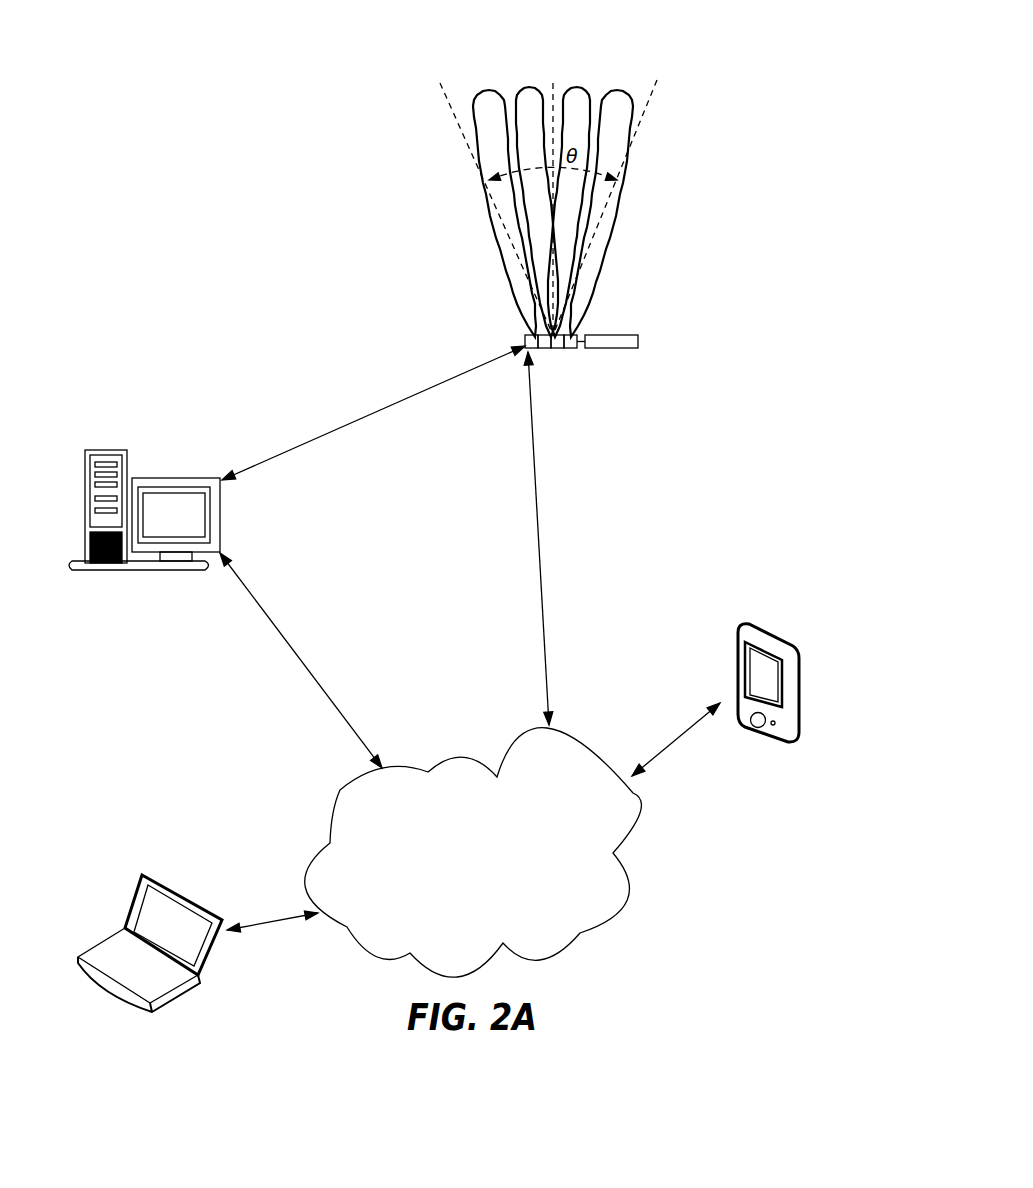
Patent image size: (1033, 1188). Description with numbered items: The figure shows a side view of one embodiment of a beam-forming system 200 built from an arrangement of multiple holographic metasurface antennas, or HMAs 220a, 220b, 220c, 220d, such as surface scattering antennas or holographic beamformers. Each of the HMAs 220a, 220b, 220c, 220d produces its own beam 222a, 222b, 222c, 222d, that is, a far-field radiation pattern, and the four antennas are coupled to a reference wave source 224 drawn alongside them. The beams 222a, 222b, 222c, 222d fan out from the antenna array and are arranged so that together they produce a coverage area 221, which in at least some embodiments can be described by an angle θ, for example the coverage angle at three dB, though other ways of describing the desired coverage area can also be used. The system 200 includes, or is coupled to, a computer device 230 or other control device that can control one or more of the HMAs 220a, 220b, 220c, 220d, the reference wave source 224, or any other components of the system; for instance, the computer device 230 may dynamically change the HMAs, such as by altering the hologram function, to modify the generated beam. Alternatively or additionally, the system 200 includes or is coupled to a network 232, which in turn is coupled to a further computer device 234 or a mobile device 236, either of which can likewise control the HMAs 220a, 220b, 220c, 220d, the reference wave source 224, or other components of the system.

The beam-forming system 200 is at (547, 377).
The HMA 220a is at (524, 333).
The HMA 220b is at (545, 348).
The HMA 220c is at (563, 348).
The HMA 220d is at (572, 348).
The coverage area 221 is at (604, 228).
The beam 222a is at (500, 248).
The beam 222b is at (527, 84).
The beam 222c is at (579, 84).
The beam 222d is at (619, 178).
The reference wave source 224 is at (640, 348).
The computer device 230 is at (105, 450).
The network 232 is at (615, 857).
The computer device 234 is at (133, 888).
The mobile device 236 is at (793, 672).